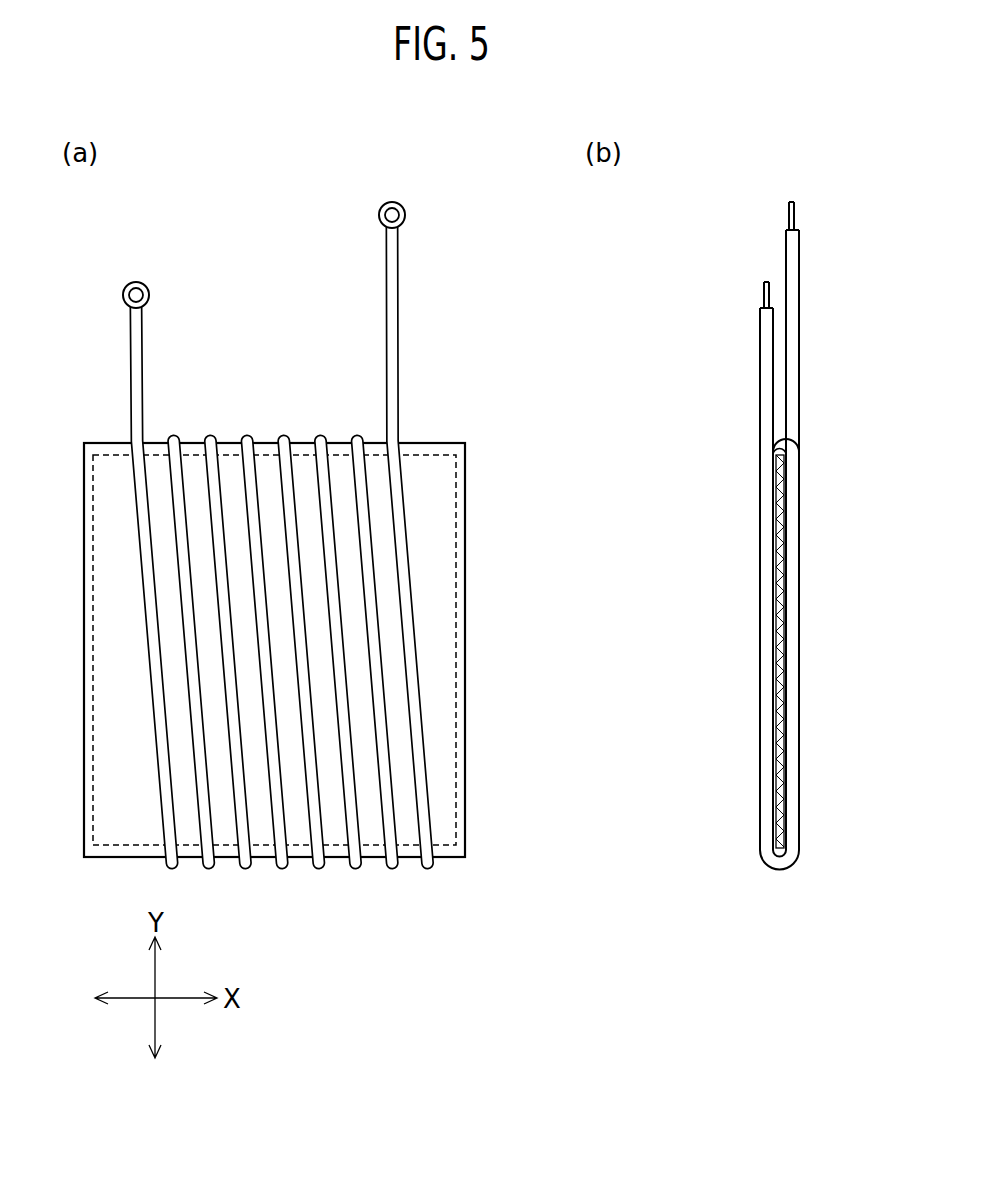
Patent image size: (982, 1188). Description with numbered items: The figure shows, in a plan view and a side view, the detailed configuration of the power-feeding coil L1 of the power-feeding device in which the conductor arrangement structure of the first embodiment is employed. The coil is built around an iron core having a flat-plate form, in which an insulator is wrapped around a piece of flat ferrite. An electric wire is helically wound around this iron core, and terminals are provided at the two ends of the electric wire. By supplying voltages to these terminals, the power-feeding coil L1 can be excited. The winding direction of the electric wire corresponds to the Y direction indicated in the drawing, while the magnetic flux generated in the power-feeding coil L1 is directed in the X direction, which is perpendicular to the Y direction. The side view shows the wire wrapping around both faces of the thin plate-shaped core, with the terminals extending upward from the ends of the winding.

The power-feeding coil L1 is at (283, 237).